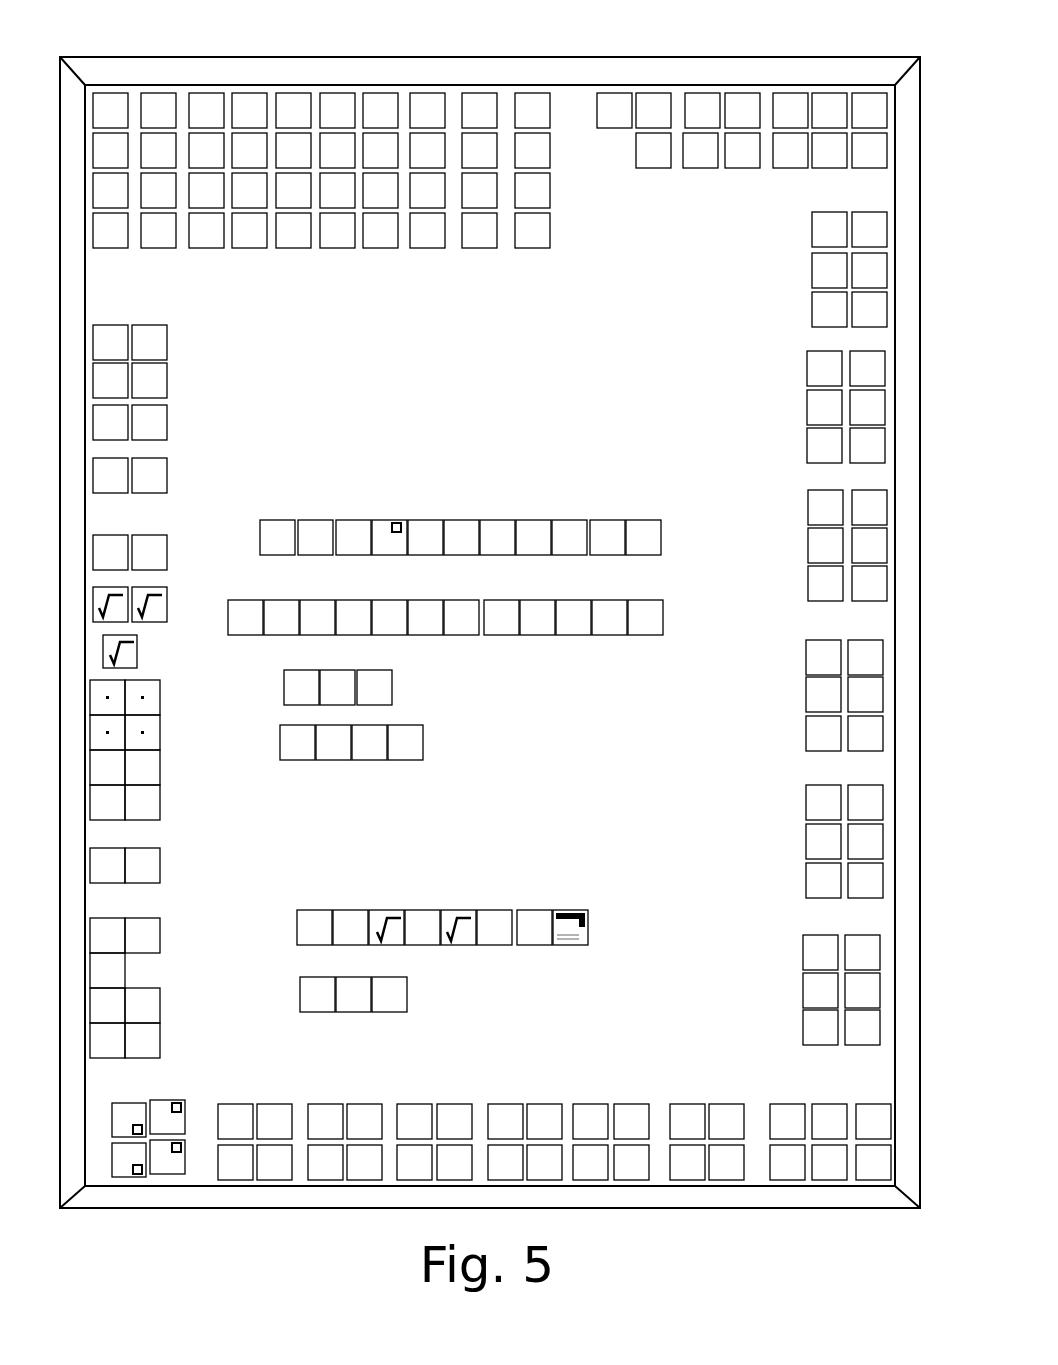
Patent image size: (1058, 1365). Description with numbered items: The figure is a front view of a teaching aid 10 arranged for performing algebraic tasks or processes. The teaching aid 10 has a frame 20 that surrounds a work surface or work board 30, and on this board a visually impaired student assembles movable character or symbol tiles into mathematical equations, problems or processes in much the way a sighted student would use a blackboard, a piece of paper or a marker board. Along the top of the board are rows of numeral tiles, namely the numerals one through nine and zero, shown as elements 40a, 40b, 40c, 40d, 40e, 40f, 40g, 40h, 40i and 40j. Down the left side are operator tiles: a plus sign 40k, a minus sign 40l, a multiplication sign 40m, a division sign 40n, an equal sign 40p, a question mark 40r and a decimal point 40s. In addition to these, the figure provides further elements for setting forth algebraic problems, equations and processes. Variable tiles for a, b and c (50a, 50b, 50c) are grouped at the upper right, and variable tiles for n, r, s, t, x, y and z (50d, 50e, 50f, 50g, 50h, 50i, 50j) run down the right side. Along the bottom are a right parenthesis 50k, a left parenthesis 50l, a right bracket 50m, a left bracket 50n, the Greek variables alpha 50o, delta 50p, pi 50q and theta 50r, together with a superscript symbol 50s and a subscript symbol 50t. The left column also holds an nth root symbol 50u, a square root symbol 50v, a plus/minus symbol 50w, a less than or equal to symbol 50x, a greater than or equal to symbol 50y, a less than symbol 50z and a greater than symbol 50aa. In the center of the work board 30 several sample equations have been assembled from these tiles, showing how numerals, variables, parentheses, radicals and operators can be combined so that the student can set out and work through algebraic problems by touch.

The teaching aid 10 is at (243, 44).
The frame 20 is at (617, 75).
The work surface or work board 30 is at (640, 270).
The numeral "1" element 40a is at (105, 250).
The numeral "2" element 40b is at (160, 250).
The numeral "3" element 40c is at (202, 250).
The numeral "4" element 40d is at (247, 250).
The numeral "5" element 40e is at (295, 250).
The numeral "6" element 40f is at (340, 248).
The numeral "7" element 40g is at (387, 243).
The numeral "8" element 40h is at (430, 248).
The numeral "9" element 40i is at (483, 250).
The numeral "0" element 40j is at (535, 252).
The plus sign element 40k is at (168, 1033).
The minus sign element 40l is at (122, 972).
The multiplication sign element 40m is at (163, 960).
The division sign element 40n is at (160, 920).
The equal sign element 40p is at (165, 845).
The question mark element 40r is at (170, 775).
The decimal point element 40s is at (168, 712).
The variable "a" element 50a is at (648, 173).
The variable "b" element 50b is at (693, 175).
The variable "c" element 50c is at (800, 183).
The variable "n" element 50d is at (808, 268).
The variable "r" element 50e is at (797, 408).
The variable "s" element 50f is at (795, 552).
The variable "t" element 50g is at (797, 690).
The variable "x" element 50h is at (790, 840).
The variable "y" element 50i is at (800, 990).
The variable "z" element 50j is at (800, 1090).
The right parenthesis element 50k is at (728, 1100).
The left parenthesis element 50l is at (685, 1100).
The right bracket element 50m is at (631, 1100).
The left bracket element 50n is at (585, 1097).
The variable "α" element 50o is at (515, 1097).
The variable "Δ" element 50p is at (427, 1097).
The variable "π" element 50q is at (345, 1100).
The variable "θ" element 50r is at (240, 1102).
The superscript symbol element 50s is at (182, 1092).
The subscript symbol element 50t is at (120, 1097).
The nth root symbol element 50u is at (143, 648).
The square root symbol element 50v is at (172, 602).
The plus/minus symbol element 50w is at (168, 540).
The less than or equal to symbol element 50x is at (168, 472).
The greater than or equal to symbol element 50y is at (170, 418).
The less than symbol element 50z is at (175, 383).
The greater than symbol element 50aa is at (172, 338).